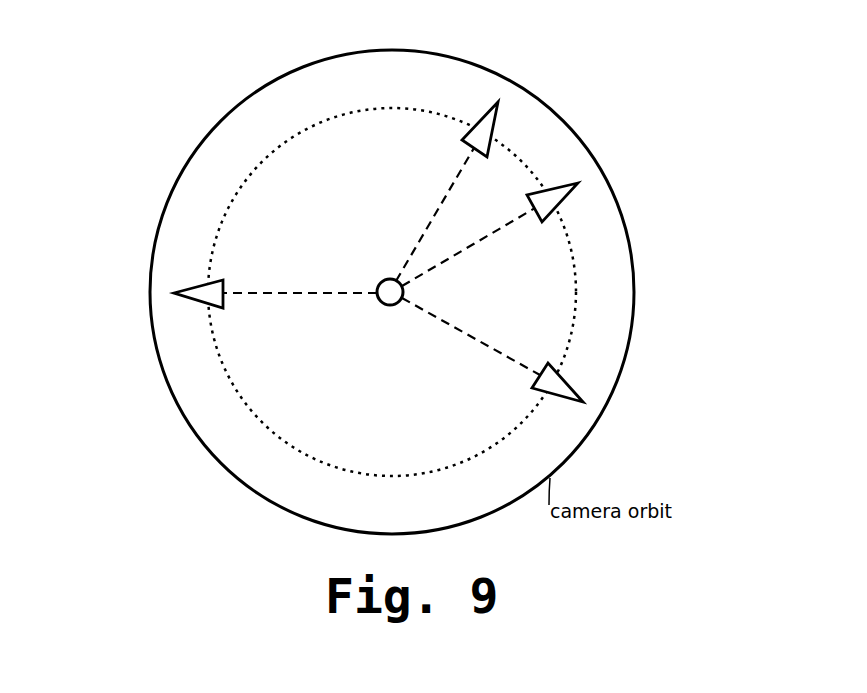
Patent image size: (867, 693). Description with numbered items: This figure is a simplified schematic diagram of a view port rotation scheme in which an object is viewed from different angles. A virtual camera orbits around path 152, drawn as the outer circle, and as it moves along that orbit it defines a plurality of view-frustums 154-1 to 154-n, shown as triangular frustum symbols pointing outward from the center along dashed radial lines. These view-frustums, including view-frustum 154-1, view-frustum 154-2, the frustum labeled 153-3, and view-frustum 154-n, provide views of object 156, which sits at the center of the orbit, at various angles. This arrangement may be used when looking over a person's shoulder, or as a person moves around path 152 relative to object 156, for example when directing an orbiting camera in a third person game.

The path 152 is at (636, 293).
The object 156 is at (390, 278).
The view-frustum 154-1 is at (496, 128).
The view-frustum 154-2 is at (563, 207).
The camera position 3 153-3 is at (568, 378).
The view-frustum 154-n is at (192, 287).